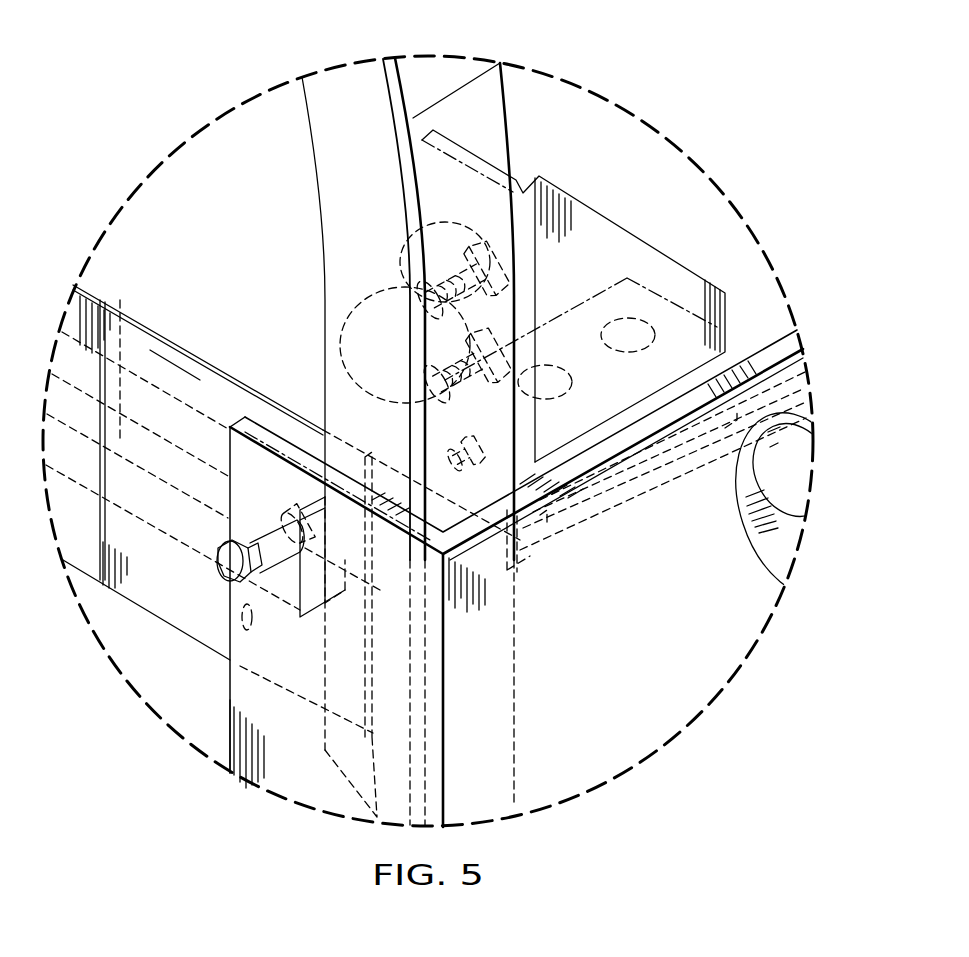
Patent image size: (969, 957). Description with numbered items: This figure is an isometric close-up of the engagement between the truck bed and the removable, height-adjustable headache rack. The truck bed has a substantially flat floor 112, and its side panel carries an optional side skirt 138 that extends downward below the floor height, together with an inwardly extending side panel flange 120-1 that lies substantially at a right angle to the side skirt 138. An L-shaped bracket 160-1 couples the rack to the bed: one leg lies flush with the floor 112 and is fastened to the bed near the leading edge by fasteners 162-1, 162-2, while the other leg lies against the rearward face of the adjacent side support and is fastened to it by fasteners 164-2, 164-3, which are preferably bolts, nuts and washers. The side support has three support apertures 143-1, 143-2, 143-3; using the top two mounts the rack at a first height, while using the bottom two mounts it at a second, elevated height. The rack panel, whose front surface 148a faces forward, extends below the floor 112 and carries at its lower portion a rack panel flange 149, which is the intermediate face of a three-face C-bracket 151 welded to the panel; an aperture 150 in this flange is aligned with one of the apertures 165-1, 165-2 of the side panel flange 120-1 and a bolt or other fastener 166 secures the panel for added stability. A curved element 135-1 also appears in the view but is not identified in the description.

The curved rail section 135-1 is at (507, 88).
The bracket 160-1 is at (588, 213).
The fastener 162-1 is at (556, 364).
The fastener 162-2 is at (636, 318).
The fastener 164-3 is at (418, 232).
The fastener 164-2 is at (340, 313).
The support aperture 143-3 is at (476, 248).
The support aperture 143-2 is at (400, 342).
The support aperture 143-1 is at (495, 447).
The floor 112 is at (762, 318).
The aperture 150 is at (265, 522).
The fastener 166 is at (226, 562).
The C-bracket 151 is at (207, 543).
The aperture 165-2 is at (240, 628).
The aperture 165-1 is at (284, 566).
The rack panel flange 149 is at (145, 437).
The front surface 148a is at (197, 378).
The side panel flange 120-1 is at (290, 782).
The side skirt 138 is at (677, 627).